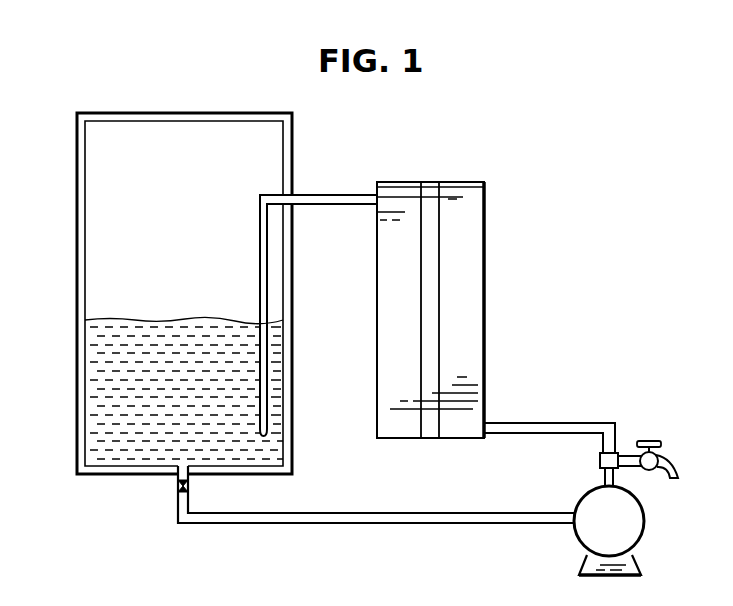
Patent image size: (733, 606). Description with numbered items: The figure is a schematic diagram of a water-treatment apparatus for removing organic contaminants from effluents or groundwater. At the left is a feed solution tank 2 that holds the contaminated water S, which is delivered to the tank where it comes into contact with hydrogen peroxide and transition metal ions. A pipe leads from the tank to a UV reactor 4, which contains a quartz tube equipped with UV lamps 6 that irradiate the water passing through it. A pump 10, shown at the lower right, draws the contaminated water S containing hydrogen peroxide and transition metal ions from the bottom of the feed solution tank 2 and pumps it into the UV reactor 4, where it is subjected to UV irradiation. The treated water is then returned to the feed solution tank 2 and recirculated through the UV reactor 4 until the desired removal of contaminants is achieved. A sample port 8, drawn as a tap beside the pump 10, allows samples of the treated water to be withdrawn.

The feed solution tank 2 is at (100, 213).
The contaminated water S is at (102, 409).
The UV lamps 6 is at (422, 182).
The UV reactor 4 is at (470, 282).
The sample port 8 is at (668, 455).
The pump 10 is at (630, 507).